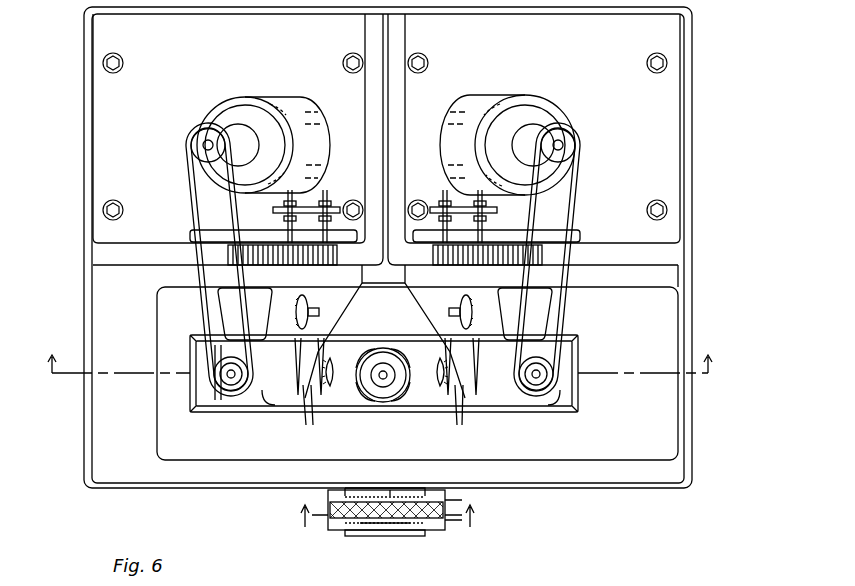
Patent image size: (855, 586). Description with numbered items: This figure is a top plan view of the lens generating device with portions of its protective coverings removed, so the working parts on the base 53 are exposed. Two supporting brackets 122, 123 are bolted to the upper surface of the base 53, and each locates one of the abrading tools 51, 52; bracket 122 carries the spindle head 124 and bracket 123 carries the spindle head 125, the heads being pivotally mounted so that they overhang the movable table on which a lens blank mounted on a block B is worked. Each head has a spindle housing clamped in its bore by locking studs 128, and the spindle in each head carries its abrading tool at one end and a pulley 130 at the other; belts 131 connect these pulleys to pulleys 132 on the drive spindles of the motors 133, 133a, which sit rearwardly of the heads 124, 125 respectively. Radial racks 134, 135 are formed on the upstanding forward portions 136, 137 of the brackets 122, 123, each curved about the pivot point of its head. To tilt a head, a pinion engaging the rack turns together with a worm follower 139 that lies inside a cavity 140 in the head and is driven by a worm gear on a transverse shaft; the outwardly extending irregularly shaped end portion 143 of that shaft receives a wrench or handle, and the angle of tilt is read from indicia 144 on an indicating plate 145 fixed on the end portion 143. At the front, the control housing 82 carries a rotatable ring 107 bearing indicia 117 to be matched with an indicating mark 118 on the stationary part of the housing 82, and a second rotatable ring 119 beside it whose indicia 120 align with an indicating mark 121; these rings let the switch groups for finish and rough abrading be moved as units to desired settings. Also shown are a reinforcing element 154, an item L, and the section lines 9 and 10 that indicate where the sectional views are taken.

The base 53 is at (690, 433).
The supporting bracket 123 is at (92, 164).
The supporting bracket 122 is at (660, 168).
The spindle head 124 is at (503, 413).
The pulley support plate 154 is at (217, 403).
The spindle head 125 is at (273, 408).
The cavity 140 is at (227, 313).
The motor 133a is at (287, 100).
The motor 133 is at (548, 108).
The worm follower 139 is at (290, 262).
The radial rack 135 is at (314, 262).
The radial rack 134 is at (446, 260).
The upstanding forward portion 137 is at (345, 270).
The upstanding forward portion 136 is at (422, 272).
The irregularly shaped end portion 143 is at (455, 312).
The indicia 144 is at (455, 320).
The indicating plate 145 is at (390, 366).
The abrading tool 52 is at (336, 372).
The abrading tool 51 is at (438, 372).
The locking studs 128 is at (396, 413).
The block B is at (370, 392).
The hub shaft L is at (400, 392).
The pulley 132 is at (568, 143).
The pulley 130 is at (555, 386).
The belt 131 is at (572, 178).
The section line 9- 9 is at (383, 387).
The second rotatable ring 119 is at (328, 507).
The housing 82 is at (445, 498).
The indicia 120 is at (360, 492).
The indicating mark 121 is at (392, 492).
The indicia 117 is at (358, 531).
The indicating mark 118 is at (386, 529).
The ring 107 is at (447, 522).
The section line 10- 10 is at (390, 527).